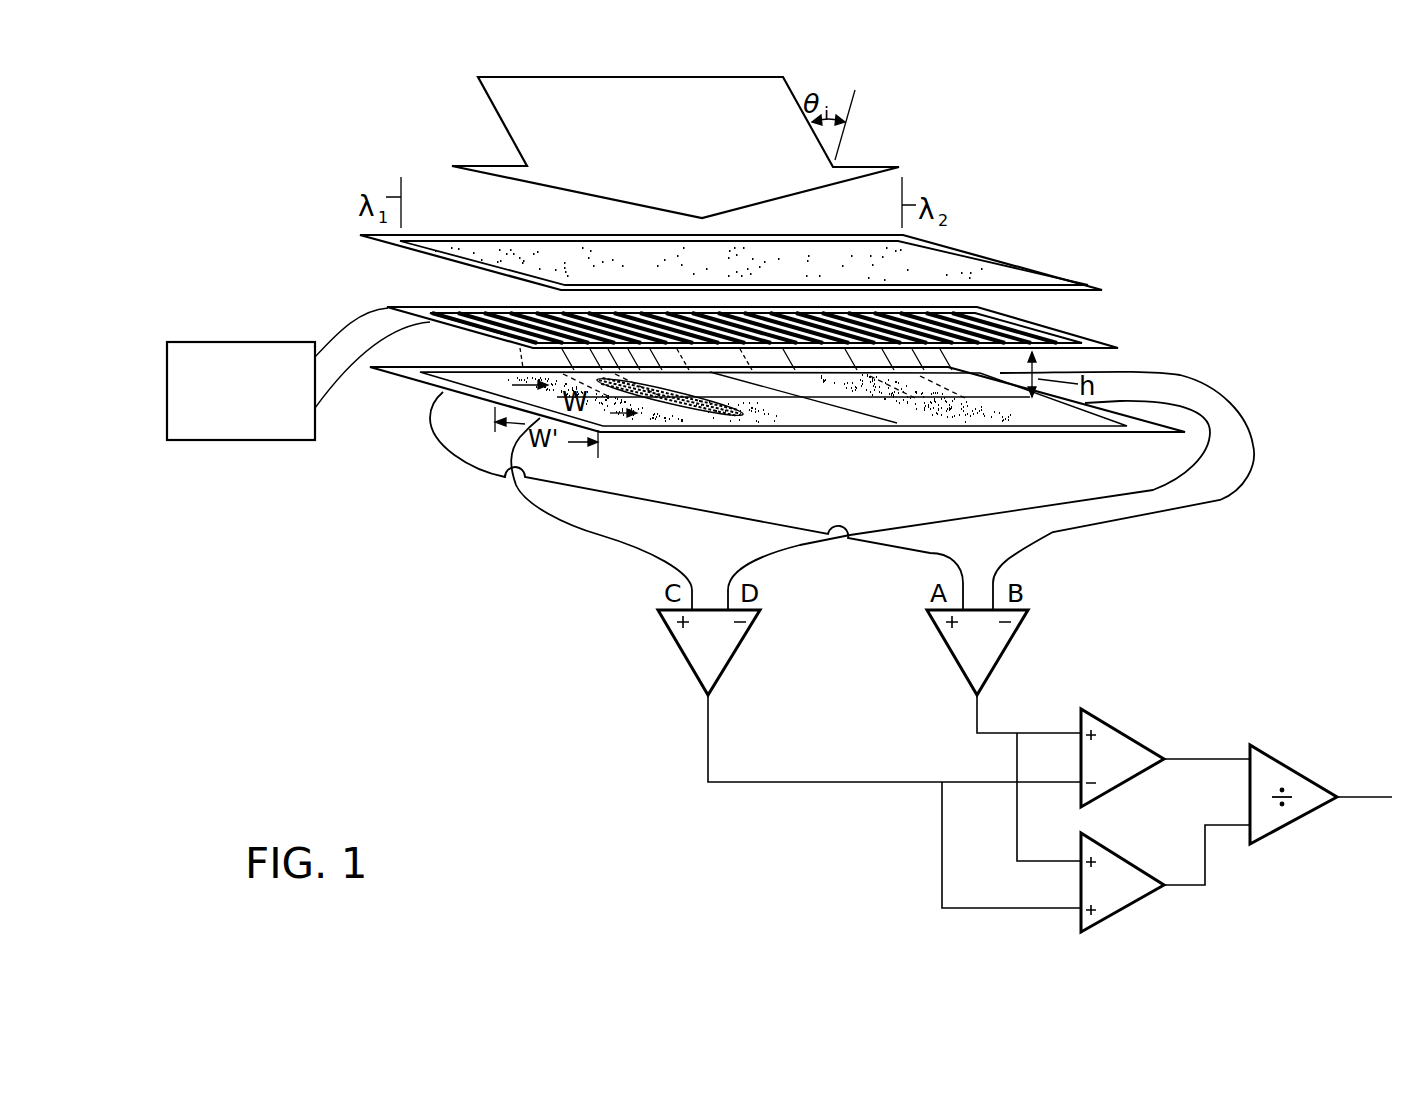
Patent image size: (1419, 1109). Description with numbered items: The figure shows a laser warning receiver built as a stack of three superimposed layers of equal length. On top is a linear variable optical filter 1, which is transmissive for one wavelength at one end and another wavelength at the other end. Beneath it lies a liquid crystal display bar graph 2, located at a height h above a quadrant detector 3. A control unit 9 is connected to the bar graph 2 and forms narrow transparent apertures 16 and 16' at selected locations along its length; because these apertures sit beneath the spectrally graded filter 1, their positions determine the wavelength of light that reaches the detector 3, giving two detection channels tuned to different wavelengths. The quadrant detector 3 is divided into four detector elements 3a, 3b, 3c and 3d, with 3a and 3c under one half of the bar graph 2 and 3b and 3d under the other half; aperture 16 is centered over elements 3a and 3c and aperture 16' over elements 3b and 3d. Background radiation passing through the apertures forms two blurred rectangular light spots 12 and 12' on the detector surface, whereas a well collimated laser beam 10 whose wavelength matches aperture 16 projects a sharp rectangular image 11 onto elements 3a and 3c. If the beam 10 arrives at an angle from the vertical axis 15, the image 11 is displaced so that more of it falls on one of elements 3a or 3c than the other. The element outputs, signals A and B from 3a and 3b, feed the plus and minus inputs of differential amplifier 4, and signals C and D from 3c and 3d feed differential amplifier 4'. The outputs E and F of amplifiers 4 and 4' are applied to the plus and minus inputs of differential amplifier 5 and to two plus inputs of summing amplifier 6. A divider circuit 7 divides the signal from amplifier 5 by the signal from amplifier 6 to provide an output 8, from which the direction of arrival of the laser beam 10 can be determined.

The linear variable optical filter 1 is at (1002, 258).
The liquid crystal display bar graph 2 is at (1057, 328).
The quadrant detector 3 is at (420, 388).
The detector element 3a is at (487, 378).
The detector element 3b is at (960, 383).
The detector element 3c is at (667, 422).
The detector element 3d is at (1075, 418).
The differential amplifier 4 is at (1004, 735).
The differential amplifier 4' is at (869, 759).
The differential amplifier 5 is at (1125, 743).
The summing amplifier 6 is at (1120, 872).
The divider circuit 7 is at (1308, 785).
The output 8 is at (1373, 793).
The control unit 9 is at (252, 342).
The laser beam 10 is at (487, 96).
The image 11 is at (722, 413).
The light spot 12 is at (746, 434).
The light spot 12' is at (923, 421).
The vertical axis 15 is at (856, 127).
The transparent aperture 16 is at (614, 310).
The transparent aperture 16' is at (892, 316).